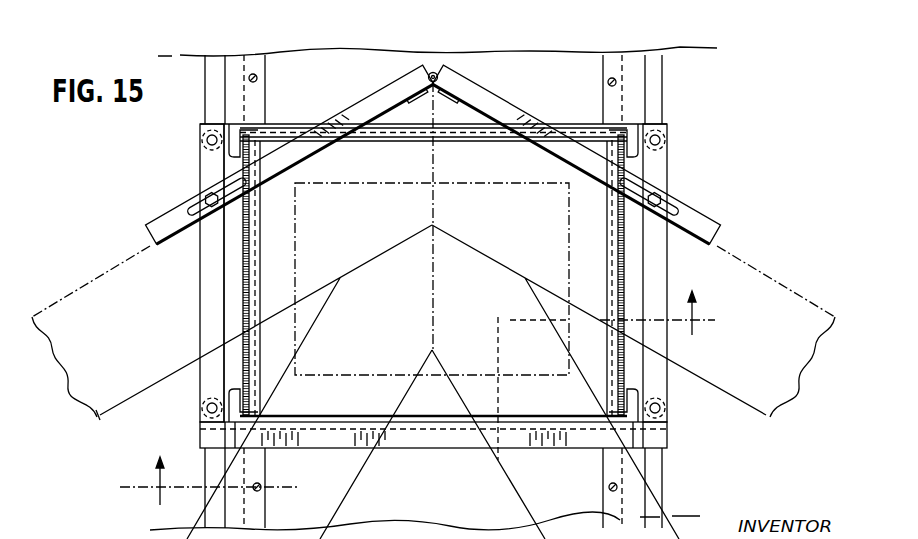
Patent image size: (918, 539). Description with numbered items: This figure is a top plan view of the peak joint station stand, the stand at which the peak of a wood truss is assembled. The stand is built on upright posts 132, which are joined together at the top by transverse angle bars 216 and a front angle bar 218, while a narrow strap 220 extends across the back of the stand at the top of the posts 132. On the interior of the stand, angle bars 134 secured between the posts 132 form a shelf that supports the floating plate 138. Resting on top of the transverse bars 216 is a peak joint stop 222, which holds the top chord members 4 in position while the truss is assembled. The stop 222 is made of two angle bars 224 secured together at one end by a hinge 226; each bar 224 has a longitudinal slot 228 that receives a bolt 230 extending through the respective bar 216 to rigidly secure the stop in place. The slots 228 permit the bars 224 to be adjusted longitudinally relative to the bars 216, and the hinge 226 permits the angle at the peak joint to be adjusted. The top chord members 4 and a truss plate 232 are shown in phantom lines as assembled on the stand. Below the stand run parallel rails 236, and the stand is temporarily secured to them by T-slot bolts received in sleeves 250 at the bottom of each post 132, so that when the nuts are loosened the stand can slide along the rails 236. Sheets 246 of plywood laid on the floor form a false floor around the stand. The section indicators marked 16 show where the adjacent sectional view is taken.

The top chord members 4 is at (80, 297).
The section line 16- 16 is at (422, 398).
The upright posts 132 is at (236, 125).
The angle bars 134 is at (247, 298).
The floating plate 138 is at (308, 400).
The transverse angle bars 216 is at (203, 300).
The front angle bar 218 is at (422, 442).
The narrow strap 220 is at (481, 136).
The peak joint stop 222 is at (385, 60).
The angle bars 224 is at (332, 125).
The hinge 226 is at (433, 72).
The longitudinal slot 228 is at (193, 205).
The bolt 230 is at (208, 197).
The truss plate 232 is at (553, 237).
The rails 236 is at (252, 97).
The sheets 246 is at (357, 38).
The sleeves 250 is at (200, 139).